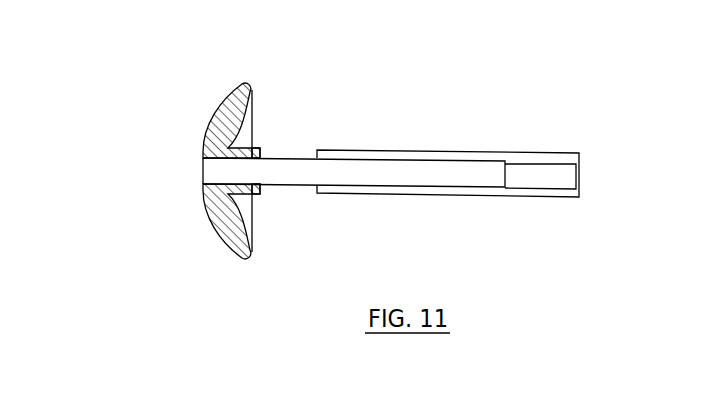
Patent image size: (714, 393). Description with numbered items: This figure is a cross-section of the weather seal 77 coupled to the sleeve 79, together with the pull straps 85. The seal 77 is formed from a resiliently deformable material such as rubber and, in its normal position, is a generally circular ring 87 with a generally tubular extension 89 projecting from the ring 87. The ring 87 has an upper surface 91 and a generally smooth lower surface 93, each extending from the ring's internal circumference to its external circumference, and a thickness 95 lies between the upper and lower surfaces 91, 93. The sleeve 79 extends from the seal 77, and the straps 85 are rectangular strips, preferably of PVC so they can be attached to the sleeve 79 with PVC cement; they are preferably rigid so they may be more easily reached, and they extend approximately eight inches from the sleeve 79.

The weather seal 77 is at (200, 159).
The circular ring 87 is at (226, 95).
The tubular extension 89 is at (255, 148).
The upper surface 91 is at (203, 184).
The lower surface 93 is at (237, 219).
The thickness 95 is at (215, 223).
The pull straps 85 is at (407, 188).
The sleeve 79 is at (445, 176).